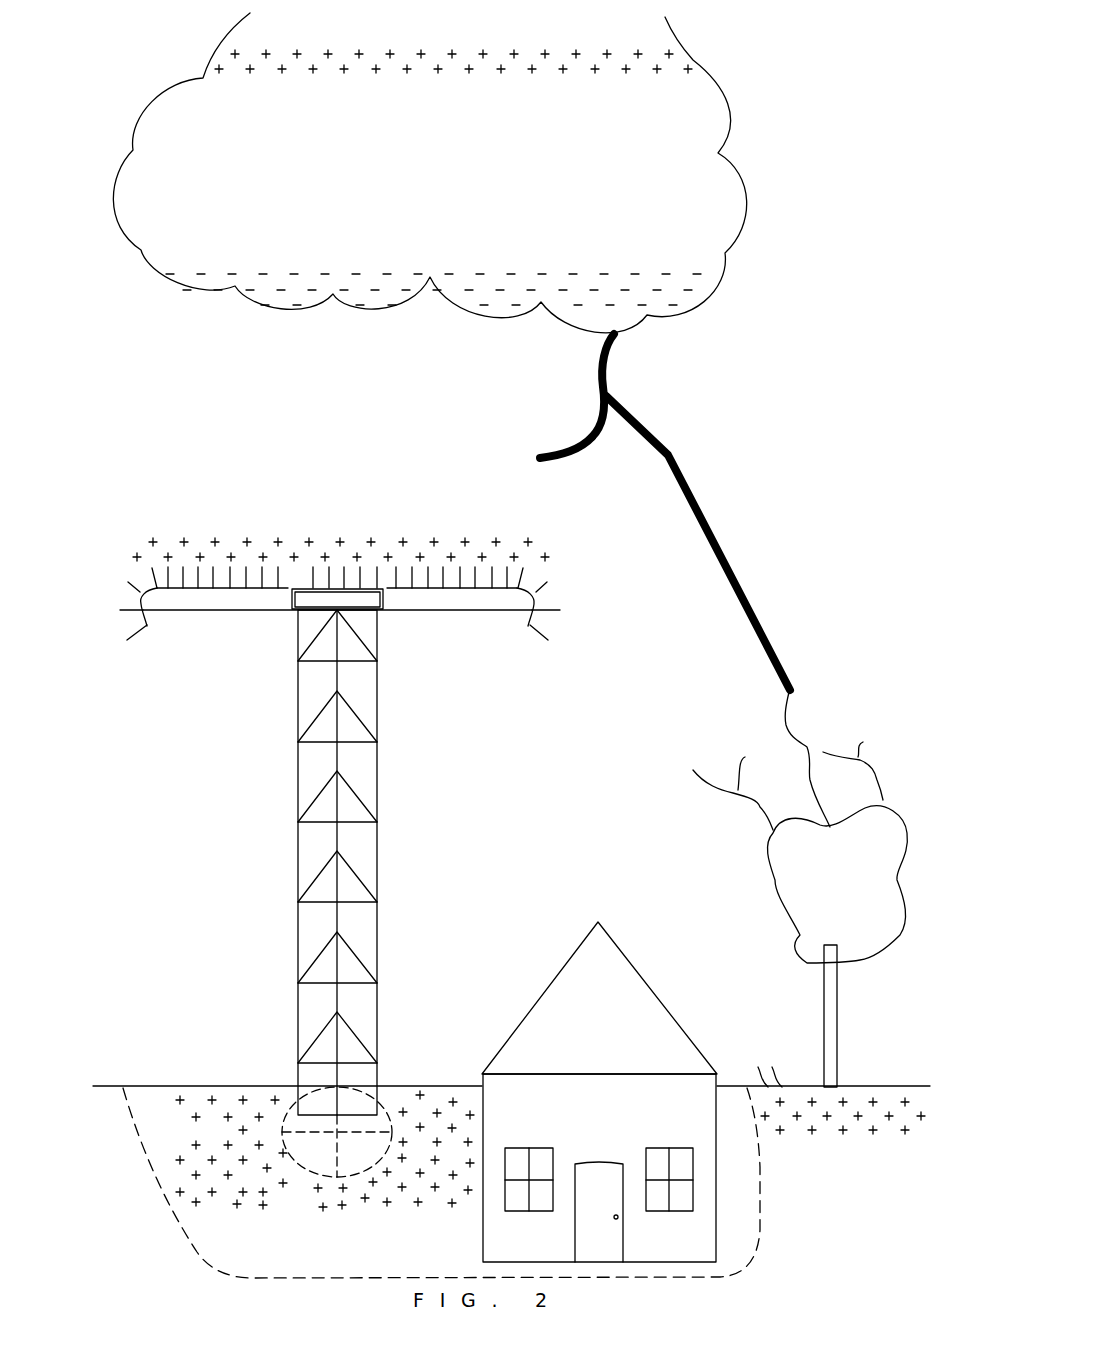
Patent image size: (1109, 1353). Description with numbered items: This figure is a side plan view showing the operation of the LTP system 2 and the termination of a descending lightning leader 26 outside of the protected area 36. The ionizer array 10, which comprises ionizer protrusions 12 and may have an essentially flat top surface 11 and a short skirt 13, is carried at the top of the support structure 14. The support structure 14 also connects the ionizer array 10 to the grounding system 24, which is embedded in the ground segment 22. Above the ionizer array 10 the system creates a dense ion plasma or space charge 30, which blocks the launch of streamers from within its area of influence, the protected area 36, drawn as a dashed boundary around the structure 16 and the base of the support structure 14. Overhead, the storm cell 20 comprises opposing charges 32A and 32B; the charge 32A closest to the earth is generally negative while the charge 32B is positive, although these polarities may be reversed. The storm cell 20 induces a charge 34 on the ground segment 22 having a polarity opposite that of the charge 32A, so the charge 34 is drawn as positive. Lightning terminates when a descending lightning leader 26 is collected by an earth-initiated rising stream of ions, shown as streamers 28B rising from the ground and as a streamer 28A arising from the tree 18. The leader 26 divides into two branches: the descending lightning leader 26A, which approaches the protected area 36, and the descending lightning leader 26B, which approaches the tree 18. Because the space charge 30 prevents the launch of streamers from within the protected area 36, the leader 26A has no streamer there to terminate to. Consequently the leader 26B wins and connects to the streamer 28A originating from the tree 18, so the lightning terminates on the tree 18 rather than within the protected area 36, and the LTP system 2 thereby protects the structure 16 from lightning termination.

The LTP system 2 is at (170, 885).
The ionizer array 10 is at (420, 617).
The top surface 11 is at (555, 568).
The ionizer protrusions 12 is at (120, 608).
The short skirt 13 is at (537, 621).
The support structure 14 is at (298, 867).
The structure 16 is at (612, 1118).
The tree 18 is at (903, 870).
The storm cell 20 is at (466, 142).
The ground segment 22 is at (120, 1203).
The grounding system 24 is at (318, 1175).
The descending lightning leader 26 is at (608, 383).
The descending lightning leader 26A is at (560, 447).
The descending lightning leader 26B is at (720, 547).
The streamer 28A is at (788, 758).
The streamers 28B is at (765, 1064).
The space charge 30 is at (228, 528).
The charge 32A is at (705, 283).
The charge 32B is at (687, 60).
The charge 34 is at (218, 1127).
The protected area 36 is at (198, 1262).